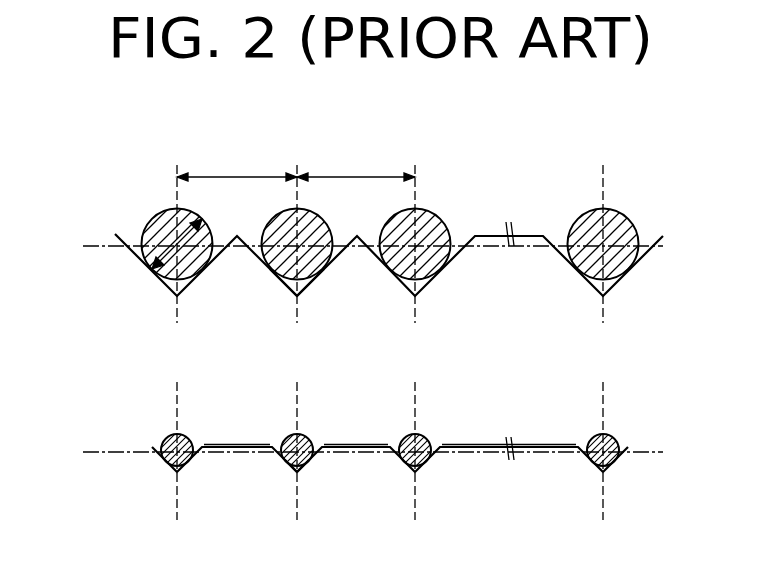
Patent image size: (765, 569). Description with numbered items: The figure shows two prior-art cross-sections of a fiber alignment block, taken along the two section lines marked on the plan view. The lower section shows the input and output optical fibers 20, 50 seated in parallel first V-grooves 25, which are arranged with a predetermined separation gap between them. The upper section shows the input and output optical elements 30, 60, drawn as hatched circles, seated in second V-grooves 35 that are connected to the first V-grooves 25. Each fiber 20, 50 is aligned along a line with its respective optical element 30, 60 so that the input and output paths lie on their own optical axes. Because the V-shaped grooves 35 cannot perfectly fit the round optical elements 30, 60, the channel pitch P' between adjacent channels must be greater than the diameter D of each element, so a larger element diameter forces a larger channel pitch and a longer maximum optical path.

The output optical element 60 is at (447, 222).
The input optical element 30 is at (374, 242).
The second V-grooves 35 is at (310, 283).
The output optical fiber 50 is at (427, 437).
The input optical fiber 20 is at (370, 440).
The first V-grooves 25 is at (300, 470).